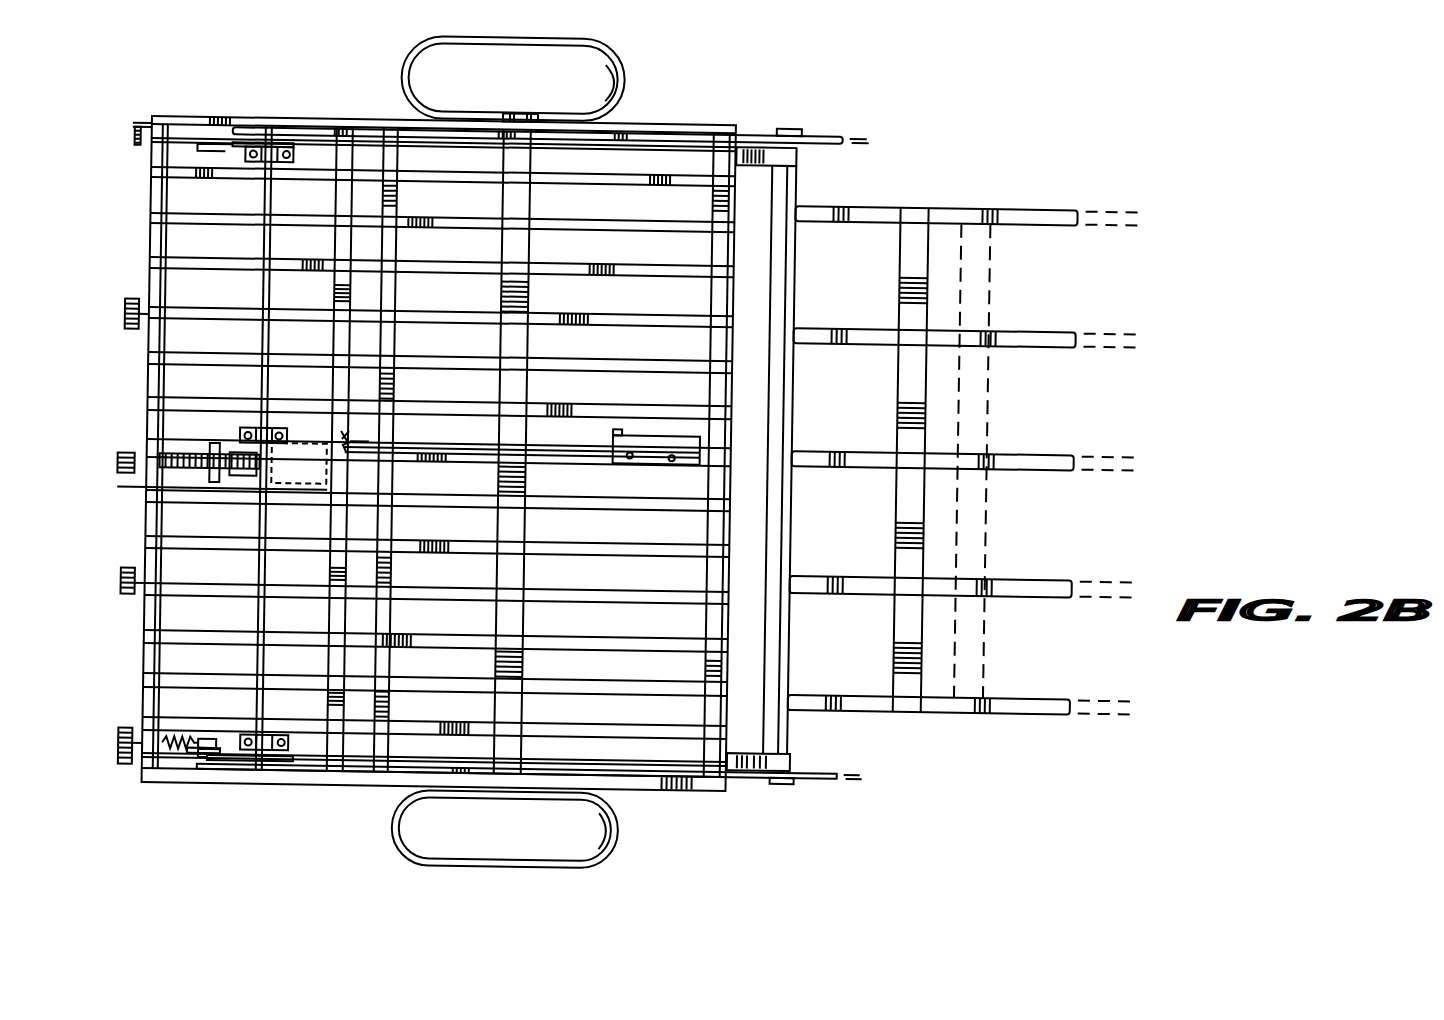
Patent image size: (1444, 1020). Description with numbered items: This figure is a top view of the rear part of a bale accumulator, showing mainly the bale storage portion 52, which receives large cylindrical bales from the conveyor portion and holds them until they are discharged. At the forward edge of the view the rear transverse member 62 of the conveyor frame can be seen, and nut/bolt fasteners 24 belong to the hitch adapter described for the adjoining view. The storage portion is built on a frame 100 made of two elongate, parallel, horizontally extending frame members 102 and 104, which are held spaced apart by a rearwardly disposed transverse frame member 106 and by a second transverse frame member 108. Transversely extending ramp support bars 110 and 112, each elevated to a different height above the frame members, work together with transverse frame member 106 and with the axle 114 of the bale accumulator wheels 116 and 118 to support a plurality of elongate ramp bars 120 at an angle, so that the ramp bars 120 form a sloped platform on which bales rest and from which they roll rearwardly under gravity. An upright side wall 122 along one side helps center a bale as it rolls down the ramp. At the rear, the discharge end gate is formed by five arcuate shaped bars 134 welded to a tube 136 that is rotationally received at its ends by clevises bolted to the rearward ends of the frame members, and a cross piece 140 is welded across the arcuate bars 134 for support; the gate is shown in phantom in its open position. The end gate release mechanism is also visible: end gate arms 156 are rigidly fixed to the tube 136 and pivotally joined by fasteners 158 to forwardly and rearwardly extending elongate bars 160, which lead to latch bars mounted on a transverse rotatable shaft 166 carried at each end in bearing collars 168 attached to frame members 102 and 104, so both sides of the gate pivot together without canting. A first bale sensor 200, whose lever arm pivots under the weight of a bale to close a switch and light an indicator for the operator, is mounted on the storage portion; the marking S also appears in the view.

The nut/bolt fasteners 24 is at (650, 112).
The bale storage portion 52 is at (755, 88).
The rear transverse member 62 is at (152, 346).
The frame 100 is at (268, 108).
The frame member 102 is at (132, 771).
The frame member 104 is at (157, 112).
The transverse frame member 106 is at (715, 201).
The transverse frame member 108 is at (350, 300).
The ramp support bar 110 is at (163, 238).
The ramp support bar 112 is at (398, 246).
The axle 114 is at (496, 385).
The bale accumulator wheel 116 is at (598, 864).
The bale accumulator wheel 118 is at (576, 57).
The ramp bars 120 is at (580, 360).
The side wall 122 is at (358, 797).
The arcuate shaped bars 134 is at (1062, 328).
The tube 136 is at (790, 524).
The cross piece 140 is at (900, 400).
The end gate arm 156 is at (801, 128).
The fastener 158 is at (802, 133).
The elongate bar 160 is at (670, 133).
The shaft 166 is at (262, 610).
The bearing collar 168 is at (292, 147).
The first bale sensor 200 is at (634, 470).
The spacing S is at (333, 422).